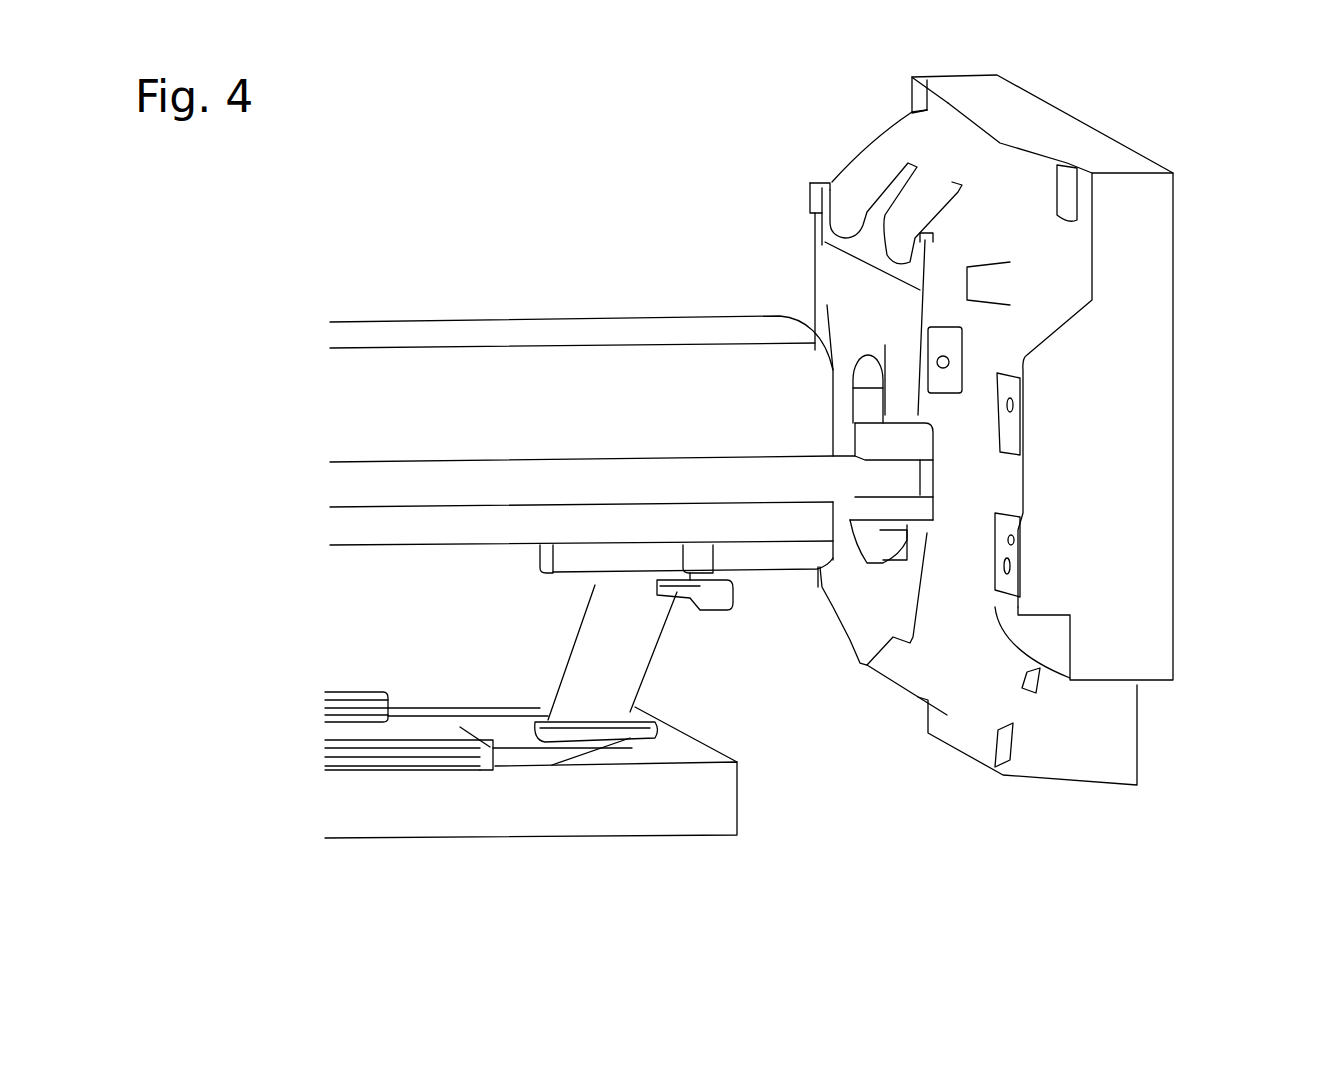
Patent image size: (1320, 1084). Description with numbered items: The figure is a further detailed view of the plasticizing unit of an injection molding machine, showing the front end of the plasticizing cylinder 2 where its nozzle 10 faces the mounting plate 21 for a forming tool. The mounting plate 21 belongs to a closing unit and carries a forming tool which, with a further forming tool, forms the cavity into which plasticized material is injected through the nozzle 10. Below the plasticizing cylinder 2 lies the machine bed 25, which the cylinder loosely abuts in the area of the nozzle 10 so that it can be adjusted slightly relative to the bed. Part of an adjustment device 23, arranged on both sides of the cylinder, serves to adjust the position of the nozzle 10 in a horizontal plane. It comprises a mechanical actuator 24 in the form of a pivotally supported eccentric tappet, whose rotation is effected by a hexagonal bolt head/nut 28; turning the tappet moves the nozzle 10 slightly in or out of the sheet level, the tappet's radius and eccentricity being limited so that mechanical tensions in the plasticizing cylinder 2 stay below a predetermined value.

The plasticizing cylinder 2 is at (418, 390).
The nozzle 10 is at (870, 403).
The mounting plate 21 is at (1120, 435).
The adjustment device 23 is at (752, 590).
The mechanical actuator 24 is at (690, 548).
The machine bed 25 is at (610, 793).
The hexagonal bolt head/nut 28 is at (693, 592).